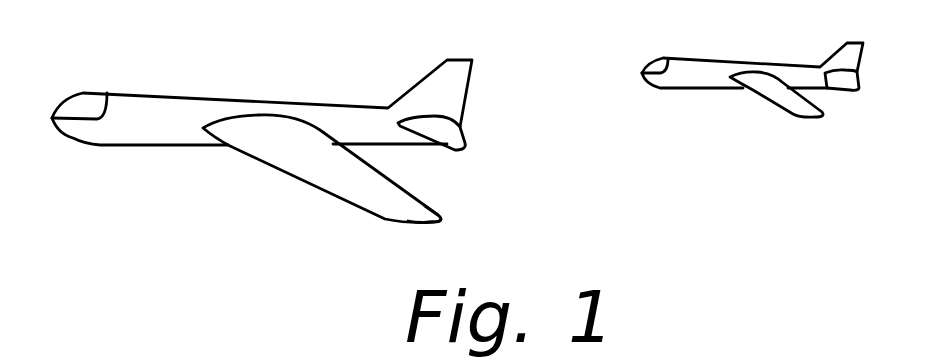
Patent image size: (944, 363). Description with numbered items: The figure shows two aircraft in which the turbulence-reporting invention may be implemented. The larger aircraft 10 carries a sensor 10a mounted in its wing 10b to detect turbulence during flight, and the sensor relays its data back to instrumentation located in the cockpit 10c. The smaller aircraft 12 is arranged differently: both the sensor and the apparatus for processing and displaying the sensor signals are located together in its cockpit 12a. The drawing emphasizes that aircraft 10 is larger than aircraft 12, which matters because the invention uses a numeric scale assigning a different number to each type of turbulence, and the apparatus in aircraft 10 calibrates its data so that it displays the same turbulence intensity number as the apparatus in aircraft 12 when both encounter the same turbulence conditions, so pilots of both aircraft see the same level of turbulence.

The aircraft 10 is at (182, 95).
The sensor 10a is at (380, 180).
The wing 10b is at (412, 217).
The cockpit 10c is at (88, 92).
The aircraft 12 is at (718, 60).
The cockpit 12a is at (658, 58).